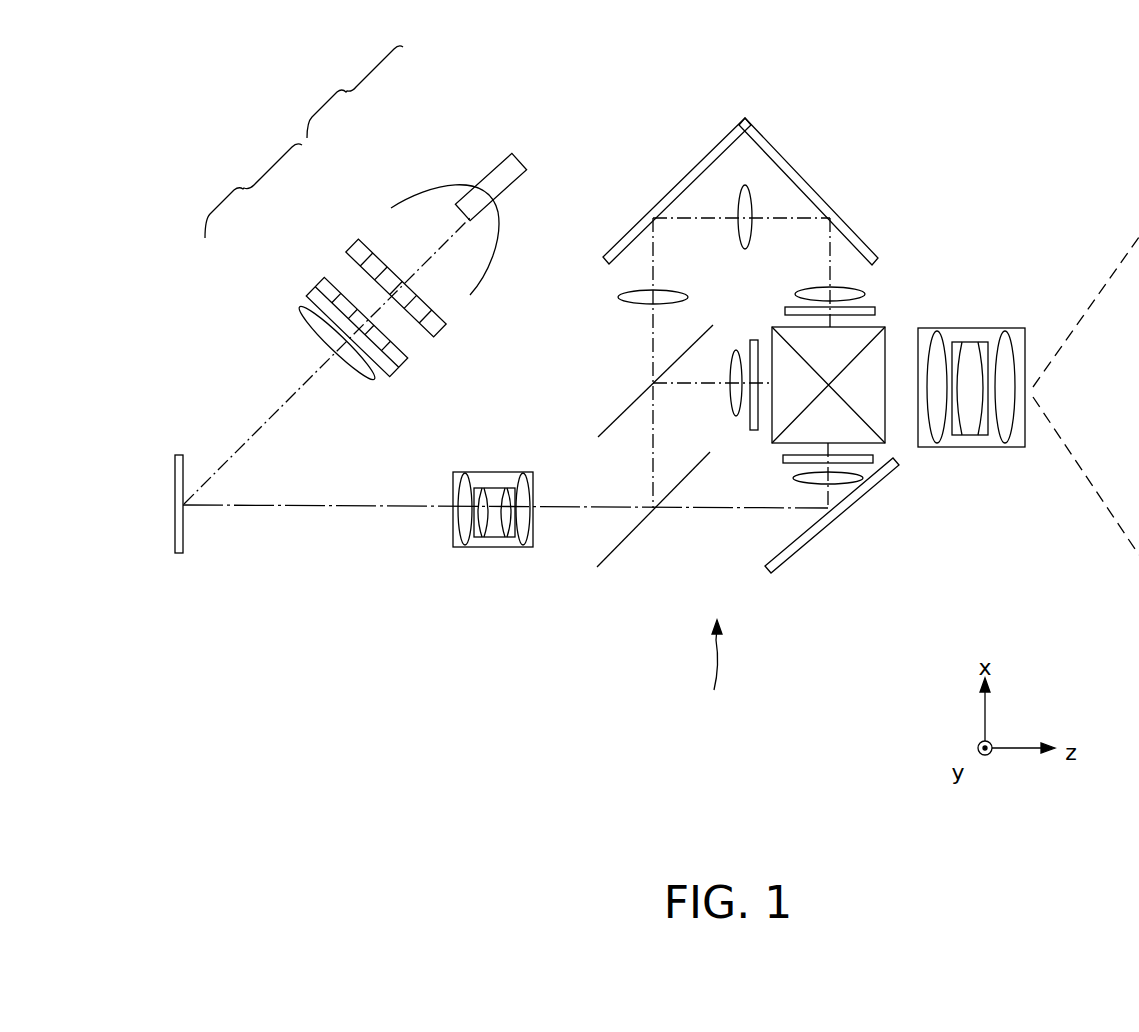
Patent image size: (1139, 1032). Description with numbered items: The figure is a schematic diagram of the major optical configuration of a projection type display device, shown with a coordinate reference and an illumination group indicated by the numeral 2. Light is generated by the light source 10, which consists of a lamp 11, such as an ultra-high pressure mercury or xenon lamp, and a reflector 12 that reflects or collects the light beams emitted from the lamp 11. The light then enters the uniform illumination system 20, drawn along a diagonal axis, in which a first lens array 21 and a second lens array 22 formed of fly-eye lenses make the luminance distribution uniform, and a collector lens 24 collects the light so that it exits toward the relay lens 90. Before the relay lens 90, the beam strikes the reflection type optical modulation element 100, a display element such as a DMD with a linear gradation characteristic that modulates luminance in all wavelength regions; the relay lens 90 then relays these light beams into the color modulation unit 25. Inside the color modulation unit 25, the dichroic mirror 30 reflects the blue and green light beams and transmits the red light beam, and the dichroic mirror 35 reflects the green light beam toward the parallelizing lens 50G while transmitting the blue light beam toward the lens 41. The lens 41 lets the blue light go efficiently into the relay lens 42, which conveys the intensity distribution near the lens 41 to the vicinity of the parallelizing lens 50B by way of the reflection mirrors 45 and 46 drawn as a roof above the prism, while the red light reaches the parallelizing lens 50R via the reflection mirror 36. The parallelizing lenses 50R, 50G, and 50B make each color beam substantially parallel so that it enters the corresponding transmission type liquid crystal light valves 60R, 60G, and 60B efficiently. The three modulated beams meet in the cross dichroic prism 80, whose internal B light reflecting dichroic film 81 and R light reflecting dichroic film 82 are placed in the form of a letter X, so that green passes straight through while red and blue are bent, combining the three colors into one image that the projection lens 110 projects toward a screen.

The light source 10 is at (355, 92).
The uniform illumination system 20 is at (253, 191).
The light source device 2 is at (312, 294).
The lamp 11 is at (520, 162).
The reflector 12 is at (422, 198).
The first lens array 21 is at (360, 247).
The second lens array 22 is at (407, 360).
The collector lens 24 is at (300, 308).
The color modulation unit 25 is at (711, 674).
The dichroic mirror 30 is at (617, 553).
The dichroic mirror 35 is at (617, 418).
The reflection mirror 36 is at (805, 548).
The lens 41 is at (673, 295).
The relay lens 42 is at (742, 250).
The reflection mirror 45 is at (683, 172).
The reflection mirror 46 is at (812, 183).
The parallelizing lens 50R is at (810, 482).
The parallelizing lens 50G is at (733, 400).
The parallelizing lens 50B is at (812, 290).
The transmission type liquid crystal light valve 60R is at (845, 466).
The transmission type liquid crystal light valve 60G is at (757, 430).
The transmission type liquid crystal light valve 60B is at (883, 307).
The cross dichroic prism 80 is at (880, 360).
The B light reflecting dichroic film 81 is at (807, 362).
The R light reflecting dichroic film 82 is at (847, 407).
The relay lens 90 is at (495, 548).
The reflection type optical modulation element 100 is at (184, 534).
The projection lens 110 is at (990, 450).